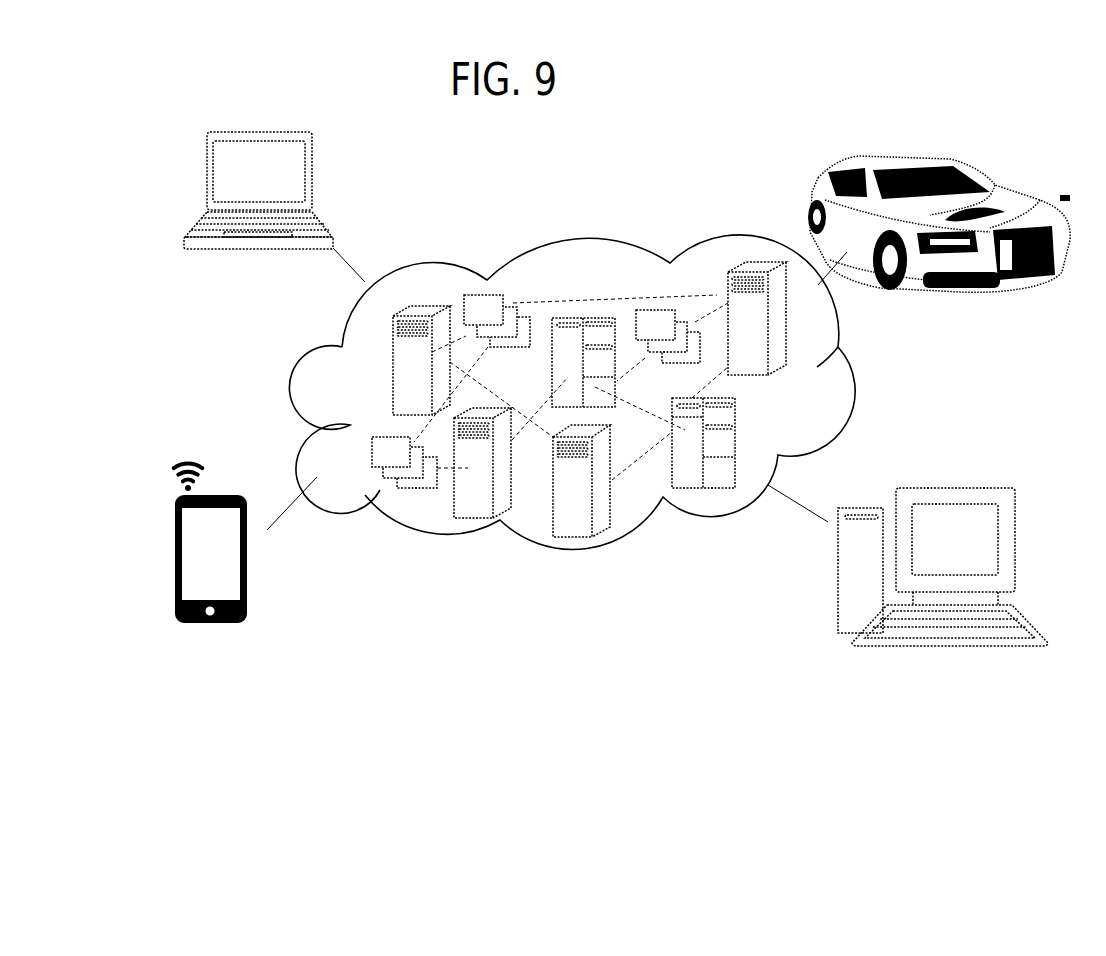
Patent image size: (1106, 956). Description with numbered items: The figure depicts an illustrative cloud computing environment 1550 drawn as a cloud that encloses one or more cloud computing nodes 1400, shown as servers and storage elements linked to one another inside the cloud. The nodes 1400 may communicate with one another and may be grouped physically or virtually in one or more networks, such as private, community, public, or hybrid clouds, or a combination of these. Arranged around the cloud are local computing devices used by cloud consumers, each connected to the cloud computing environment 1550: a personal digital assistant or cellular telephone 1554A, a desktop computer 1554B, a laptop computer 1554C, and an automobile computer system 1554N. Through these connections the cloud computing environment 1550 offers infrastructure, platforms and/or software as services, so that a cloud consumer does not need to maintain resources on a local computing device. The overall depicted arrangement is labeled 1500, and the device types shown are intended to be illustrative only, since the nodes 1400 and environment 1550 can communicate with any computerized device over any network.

The system 1500 is at (975, 101).
The cloud computing environment 1550 is at (860, 378).
The cloud computing nodes 1400 is at (793, 391).
The personal digital assistant (PDA) or cellular telephone 1554A is at (267, 585).
The desktop computer 1554B is at (860, 568).
The laptop computer 1554C is at (322, 197).
The automobile computer system 1554N is at (805, 185).